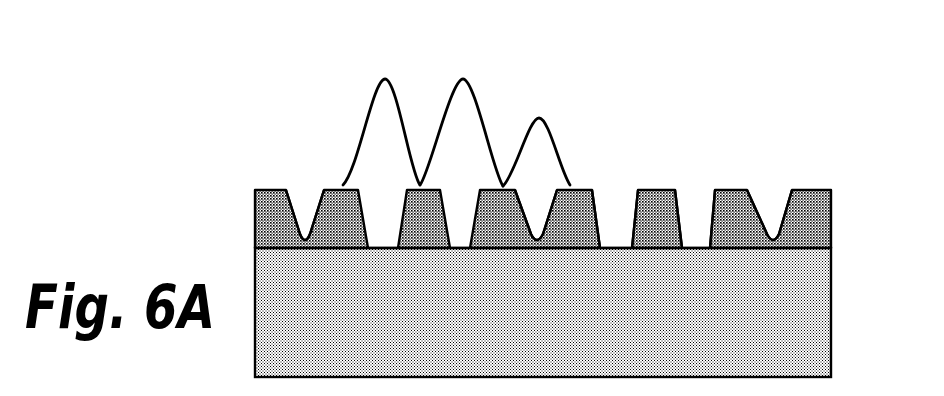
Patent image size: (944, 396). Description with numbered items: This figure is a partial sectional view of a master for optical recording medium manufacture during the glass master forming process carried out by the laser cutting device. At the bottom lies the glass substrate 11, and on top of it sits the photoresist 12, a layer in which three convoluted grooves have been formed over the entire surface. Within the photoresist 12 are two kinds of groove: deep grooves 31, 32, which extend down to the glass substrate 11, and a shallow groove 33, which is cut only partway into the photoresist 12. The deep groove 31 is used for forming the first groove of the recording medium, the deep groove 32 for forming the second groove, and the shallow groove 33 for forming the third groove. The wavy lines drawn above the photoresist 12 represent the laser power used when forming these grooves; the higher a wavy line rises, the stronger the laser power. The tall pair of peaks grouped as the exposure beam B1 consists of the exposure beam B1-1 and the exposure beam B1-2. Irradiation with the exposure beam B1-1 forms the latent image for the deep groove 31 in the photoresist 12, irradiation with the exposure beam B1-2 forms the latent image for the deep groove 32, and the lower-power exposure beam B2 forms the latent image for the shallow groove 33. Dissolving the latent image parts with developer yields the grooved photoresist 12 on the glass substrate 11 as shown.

The glass substrate 11 is at (823, 262).
The photoresist 12 is at (823, 207).
The deep groove 31 is at (615, 200).
The deep groove 32 is at (692, 200).
The shallow groove 33 is at (303, 191).
The exposure beam B1 is at (459, 93).
The exposure beam B1-1 is at (422, 74).
The exposure beam B1-2 is at (498, 120).
The exposure beam B2 is at (552, 133).